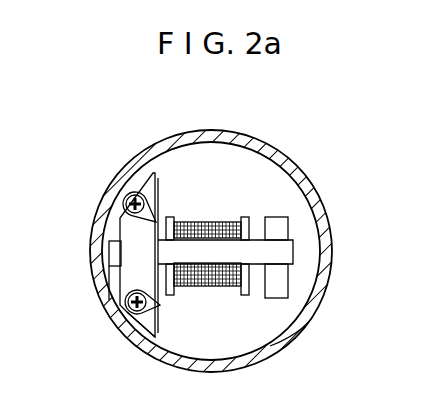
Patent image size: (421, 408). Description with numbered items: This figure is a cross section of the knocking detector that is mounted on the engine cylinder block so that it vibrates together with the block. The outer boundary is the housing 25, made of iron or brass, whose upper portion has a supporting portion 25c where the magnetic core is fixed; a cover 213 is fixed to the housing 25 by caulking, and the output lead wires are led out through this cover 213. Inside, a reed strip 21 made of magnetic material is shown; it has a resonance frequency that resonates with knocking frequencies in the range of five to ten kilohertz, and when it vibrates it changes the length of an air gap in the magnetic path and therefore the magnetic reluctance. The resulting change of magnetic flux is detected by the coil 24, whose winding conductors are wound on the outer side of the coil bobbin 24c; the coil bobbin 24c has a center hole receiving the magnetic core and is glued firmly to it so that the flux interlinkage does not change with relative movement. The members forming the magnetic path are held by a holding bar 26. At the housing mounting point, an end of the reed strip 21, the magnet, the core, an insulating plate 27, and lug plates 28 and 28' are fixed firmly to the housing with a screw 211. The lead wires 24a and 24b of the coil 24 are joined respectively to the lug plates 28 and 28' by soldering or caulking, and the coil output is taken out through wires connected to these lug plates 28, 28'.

The housing 25 is at (283, 176).
The supporting portion 25c is at (289, 232).
The cover 213 is at (289, 338).
The holding bar 26 is at (123, 273).
The insulating plate 27 is at (140, 342).
The lug plate 28 is at (126, 175).
The lug plate 28' is at (147, 341).
The screw 211 is at (126, 207).
The reed strip 21 is at (294, 252).
The coil 24 is at (224, 225).
The lead wire 24a is at (161, 222).
The lead wire 24b is at (172, 294).
The coil bobbin 24c is at (246, 286).